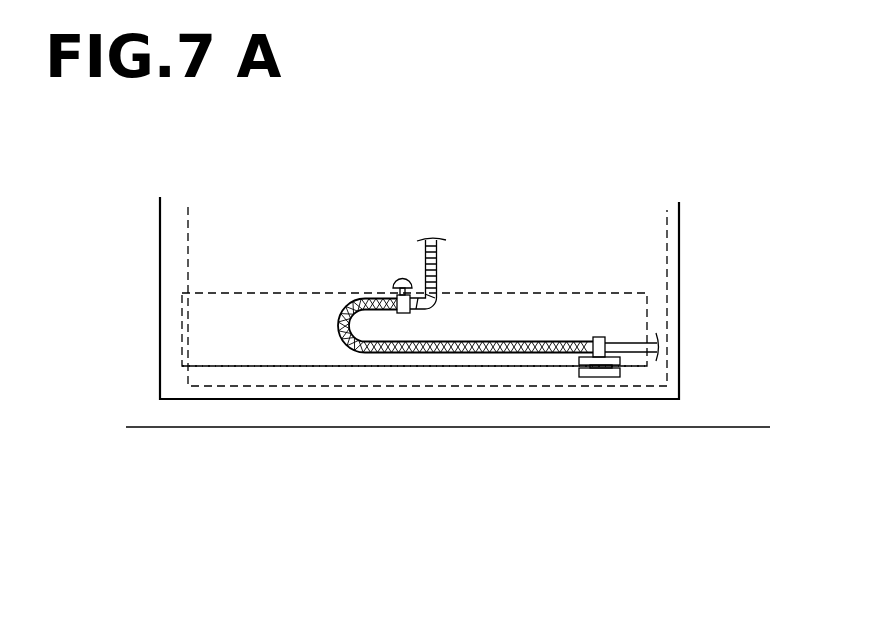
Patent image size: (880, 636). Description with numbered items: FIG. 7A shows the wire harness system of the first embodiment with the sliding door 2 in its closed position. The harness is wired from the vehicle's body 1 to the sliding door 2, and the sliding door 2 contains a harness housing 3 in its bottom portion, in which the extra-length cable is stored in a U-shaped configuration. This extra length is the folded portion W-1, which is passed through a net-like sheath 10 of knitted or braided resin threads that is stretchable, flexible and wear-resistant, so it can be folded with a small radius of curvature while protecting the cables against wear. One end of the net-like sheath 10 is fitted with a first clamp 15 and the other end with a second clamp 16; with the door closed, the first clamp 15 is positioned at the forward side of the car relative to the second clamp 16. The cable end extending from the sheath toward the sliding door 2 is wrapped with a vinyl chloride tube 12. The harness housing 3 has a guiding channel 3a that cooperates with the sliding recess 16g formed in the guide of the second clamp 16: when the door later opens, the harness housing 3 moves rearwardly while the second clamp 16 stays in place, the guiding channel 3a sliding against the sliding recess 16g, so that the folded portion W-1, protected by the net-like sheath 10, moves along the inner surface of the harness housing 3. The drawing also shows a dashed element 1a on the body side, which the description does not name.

The vehicle's body 1 is at (157, 413).
The treatment liquid surface 1a is at (198, 233).
The sliding door 2 is at (679, 261).
The harness housing 3 is at (550, 293).
The guiding channel 3a is at (550, 362).
The net-like sheath 10 is at (357, 303).
The vinyl chloride tube 12 is at (436, 262).
The first clamp 15 is at (399, 278).
The second clamp 16 is at (600, 378).
The sliding recess 16g is at (618, 367).
The folded portion W-1 is at (335, 329).